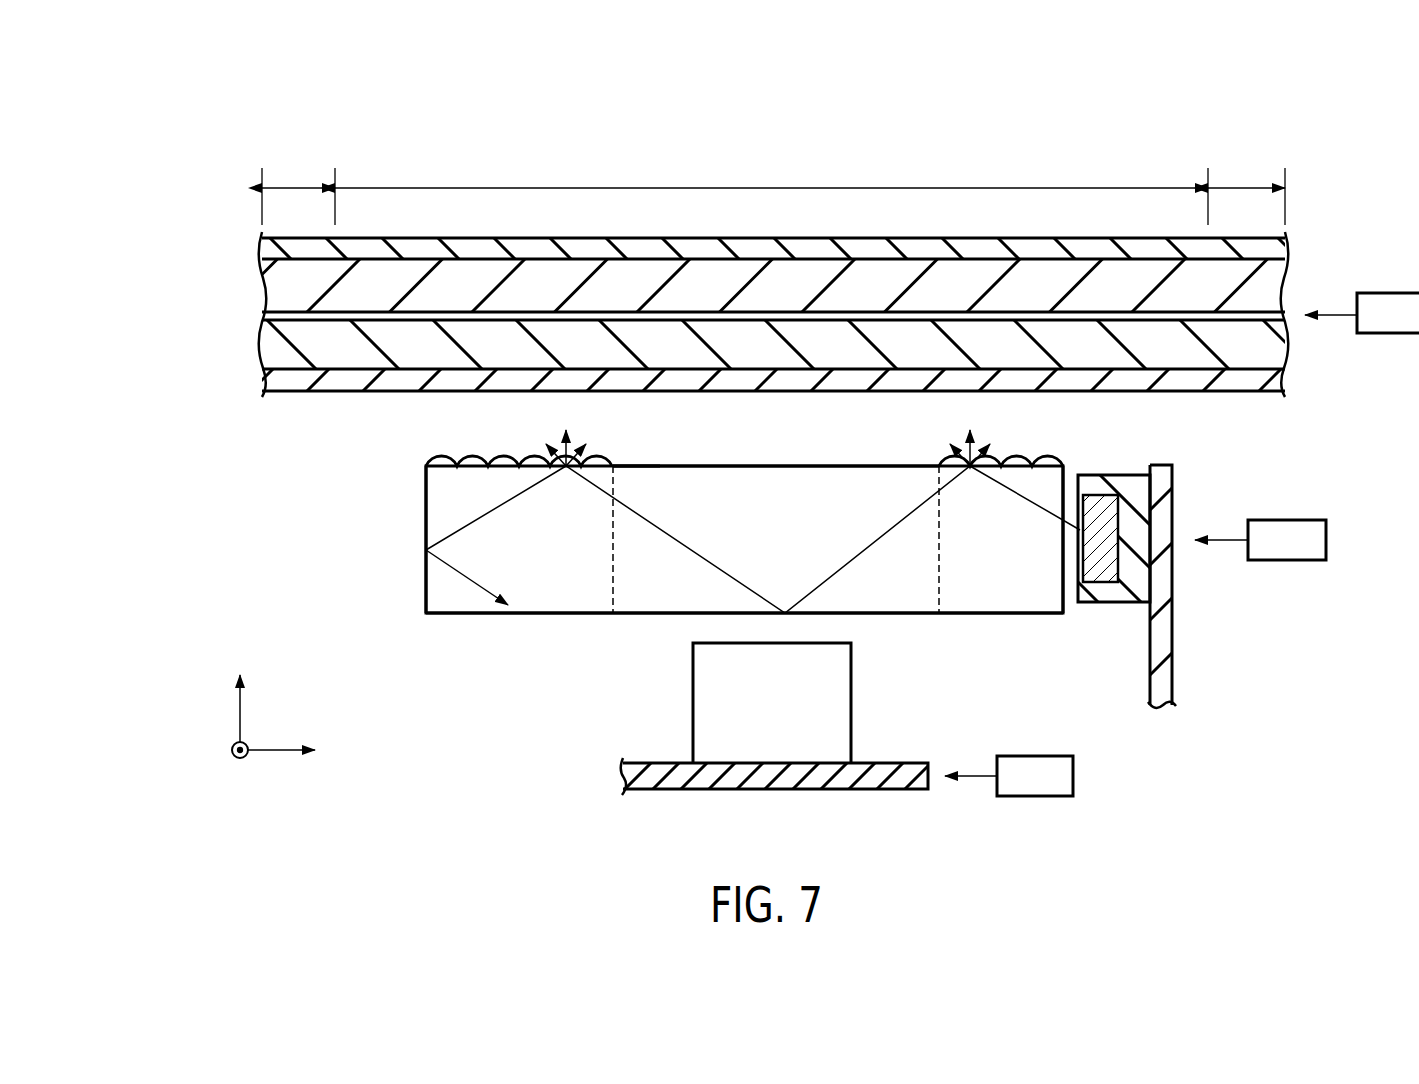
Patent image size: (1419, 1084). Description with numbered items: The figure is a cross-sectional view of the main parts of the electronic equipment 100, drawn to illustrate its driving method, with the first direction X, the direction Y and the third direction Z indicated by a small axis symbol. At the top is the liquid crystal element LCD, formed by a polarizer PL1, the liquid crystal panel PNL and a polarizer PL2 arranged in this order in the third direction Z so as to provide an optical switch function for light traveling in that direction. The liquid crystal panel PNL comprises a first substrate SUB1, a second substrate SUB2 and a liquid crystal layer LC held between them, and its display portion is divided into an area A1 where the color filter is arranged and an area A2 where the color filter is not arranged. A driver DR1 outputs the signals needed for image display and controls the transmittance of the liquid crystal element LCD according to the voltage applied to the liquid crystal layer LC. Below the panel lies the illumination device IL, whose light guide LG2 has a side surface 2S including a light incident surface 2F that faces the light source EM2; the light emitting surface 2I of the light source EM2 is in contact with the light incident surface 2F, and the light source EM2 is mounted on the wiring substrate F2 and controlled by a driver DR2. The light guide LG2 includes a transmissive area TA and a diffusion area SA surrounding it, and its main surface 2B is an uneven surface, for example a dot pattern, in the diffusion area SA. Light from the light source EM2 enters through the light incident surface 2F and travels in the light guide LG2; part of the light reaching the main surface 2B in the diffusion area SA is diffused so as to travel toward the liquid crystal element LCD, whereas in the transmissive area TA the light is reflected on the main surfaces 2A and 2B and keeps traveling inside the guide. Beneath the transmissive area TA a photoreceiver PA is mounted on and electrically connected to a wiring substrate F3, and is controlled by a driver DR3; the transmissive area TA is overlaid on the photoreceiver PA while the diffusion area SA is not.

The electronic equipment 100 is at (1184, 106).
The liquid crystal element LCD is at (1330, 278).
The liquid crystal panel PNL is at (148, 317).
The polarizer PL2 is at (262, 249).
The second substrate SUB2 is at (280, 290).
The liquid crystal layer LC is at (280, 321).
The first substrate SUB1 is at (275, 352).
The polarizer PL1 is at (268, 380).
The area A1 is at (773, 187).
The area A2 is at (771, 169).
The driver DR1 is at (1362, 313).
The driver DR2 is at (1260, 540).
The driver DR3 is at (1009, 776).
The light guide LG2 is at (435, 586).
The diffusion area SA is at (460, 446).
The main surface 2B is at (645, 455).
The transmissive area TA is at (807, 456).
The side surface 2S is at (412, 504).
The main surface 2A is at (645, 627).
The light incident surface 2F is at (1076, 464).
The light source EM2 is at (1136, 483).
The light emitting surface 2I is at (1080, 562).
The wiring substrate F2 is at (1175, 648).
The illumination device IL is at (1290, 648).
The photoreceiver PA is at (892, 707).
The wiring substrate F3 is at (845, 790).
The first direction X is at (229, 763).
The Y axis Y is at (297, 749).
The third direction Z is at (238, 686).